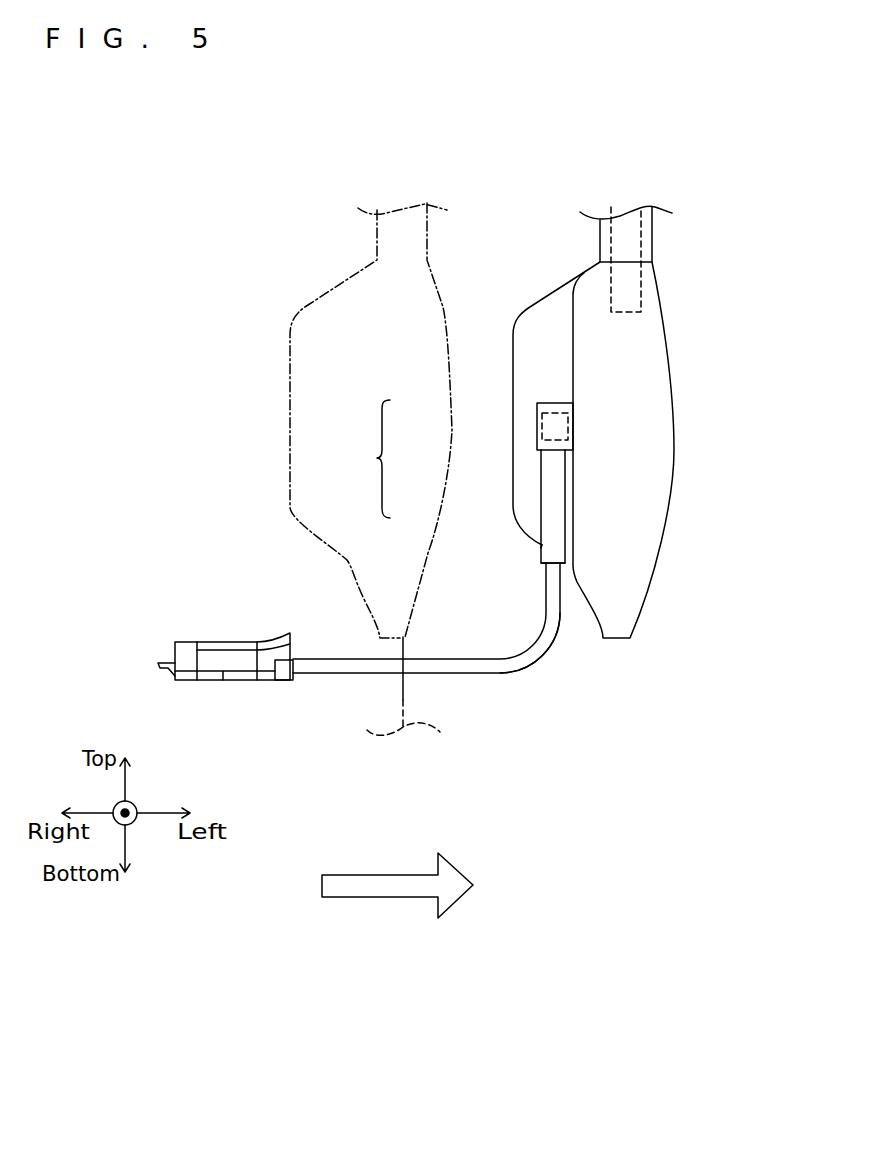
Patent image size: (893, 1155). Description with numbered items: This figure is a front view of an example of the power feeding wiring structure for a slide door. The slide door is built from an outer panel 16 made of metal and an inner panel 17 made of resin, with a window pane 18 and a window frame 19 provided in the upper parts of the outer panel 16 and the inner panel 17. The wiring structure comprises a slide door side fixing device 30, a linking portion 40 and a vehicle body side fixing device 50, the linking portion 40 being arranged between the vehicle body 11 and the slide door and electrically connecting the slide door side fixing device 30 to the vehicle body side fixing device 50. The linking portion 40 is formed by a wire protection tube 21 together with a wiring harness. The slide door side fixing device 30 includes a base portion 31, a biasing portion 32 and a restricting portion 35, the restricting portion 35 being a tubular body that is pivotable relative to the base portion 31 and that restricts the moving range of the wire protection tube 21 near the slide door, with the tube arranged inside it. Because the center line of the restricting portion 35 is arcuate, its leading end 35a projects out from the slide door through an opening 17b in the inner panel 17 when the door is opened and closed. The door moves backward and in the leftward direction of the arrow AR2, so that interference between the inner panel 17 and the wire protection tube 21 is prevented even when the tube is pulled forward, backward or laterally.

The vehicle body 11 is at (403, 700).
The outer panel 16 is at (670, 520).
The inner panel 17 is at (532, 305).
The opening 17b is at (524, 552).
The window pane 18 is at (641, 292).
The window frame 19 is at (652, 233).
The wire protection tube 21 is at (548, 642).
The slide door side fixing device 30 is at (368, 459).
The base portion 31 is at (553, 403).
The biasing portion 32 is at (537, 428).
The restricting portion 35 is at (540, 562).
The leading end 35a is at (538, 563).
The linking portion 40 is at (503, 682).
The vehicle body side fixing device 50 is at (149, 632).
The arrow AR2 is at (378, 898).